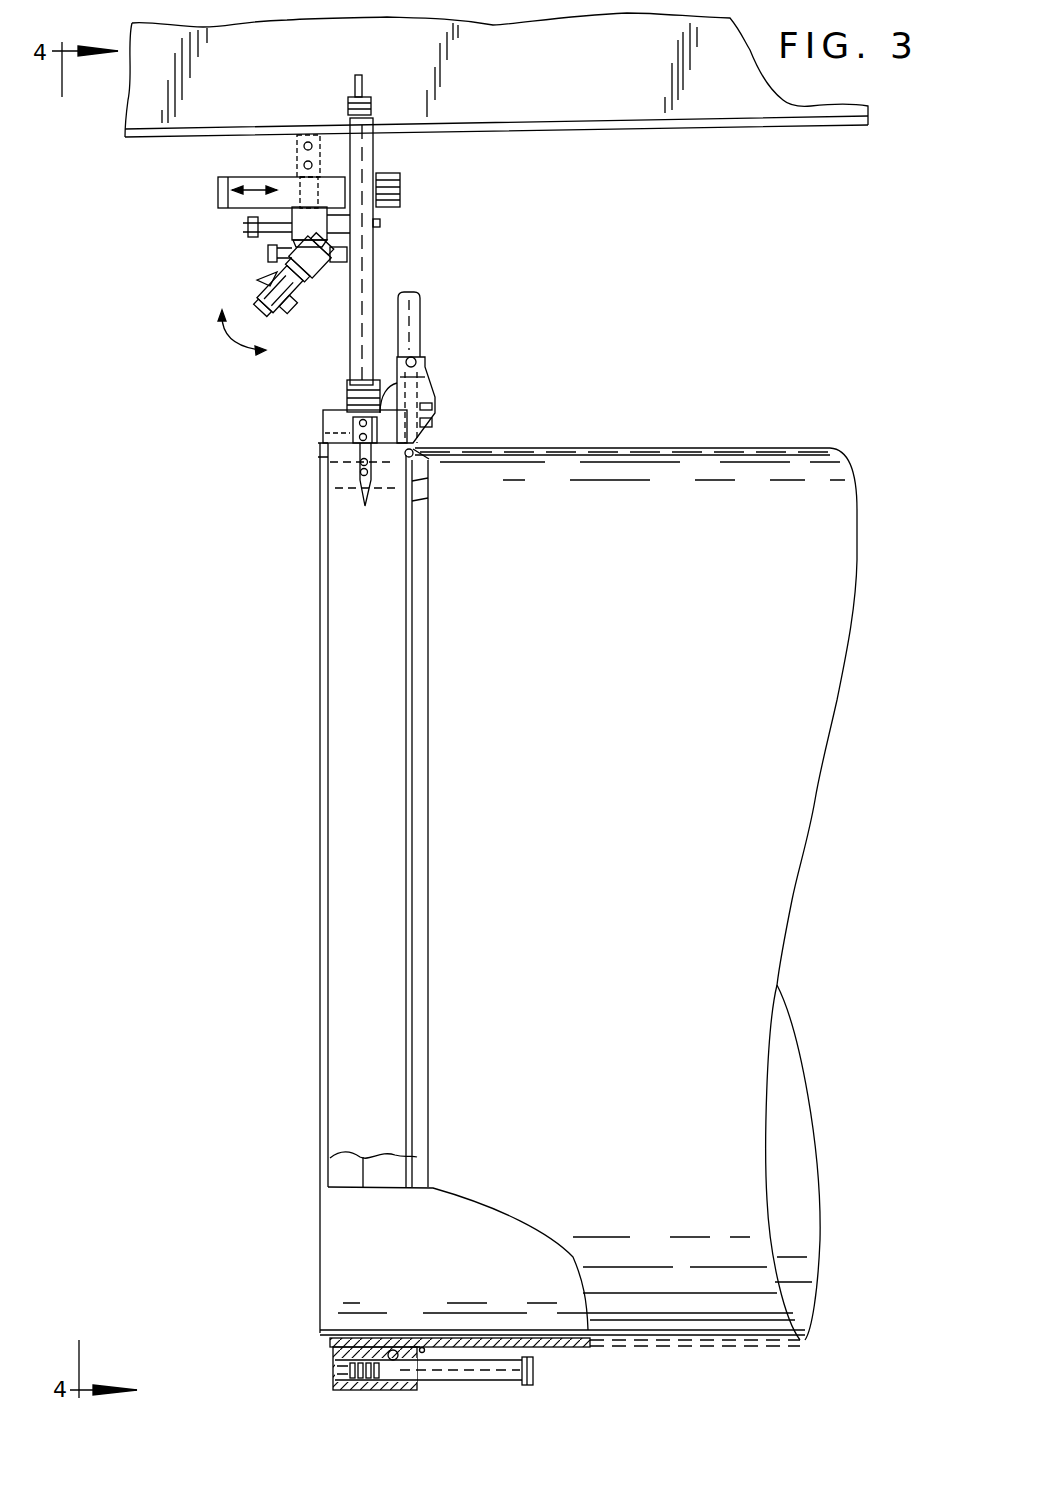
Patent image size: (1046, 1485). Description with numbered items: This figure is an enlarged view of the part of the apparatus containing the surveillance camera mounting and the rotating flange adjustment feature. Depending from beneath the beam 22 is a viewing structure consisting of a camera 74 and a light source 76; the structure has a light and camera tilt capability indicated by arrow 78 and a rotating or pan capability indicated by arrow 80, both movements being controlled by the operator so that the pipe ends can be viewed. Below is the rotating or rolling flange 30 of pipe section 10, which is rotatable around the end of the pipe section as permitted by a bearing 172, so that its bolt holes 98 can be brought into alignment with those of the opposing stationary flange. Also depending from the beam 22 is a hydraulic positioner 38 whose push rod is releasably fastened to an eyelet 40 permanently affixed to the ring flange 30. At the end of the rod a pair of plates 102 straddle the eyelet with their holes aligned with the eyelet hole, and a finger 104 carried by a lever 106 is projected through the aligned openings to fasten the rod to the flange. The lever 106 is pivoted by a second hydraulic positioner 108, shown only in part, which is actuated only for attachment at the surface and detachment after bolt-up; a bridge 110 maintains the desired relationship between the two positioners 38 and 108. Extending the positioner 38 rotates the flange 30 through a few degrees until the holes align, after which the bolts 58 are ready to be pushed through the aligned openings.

The beam 22 is at (566, 72).
The hydraulic positioner 38 is at (372, 150).
The arrow indicating rotating or pan capability 80 is at (254, 188).
The camera 74 is at (264, 292).
The light source 76 is at (298, 300).
The arrow indicating light/camera tilt capability 78 is at (232, 346).
The second hydraulic positioner 108 is at (422, 303).
The bridge 110 is at (436, 392).
The finger 104 is at (355, 448).
The eyelet 40 is at (360, 470).
The lever 106 is at (408, 462).
The plates 102 is at (372, 488).
The rotating flange 30 is at (342, 600).
The pipe section 10 is at (440, 663).
The bearing 172 is at (388, 1352).
The bolt holes 98 is at (398, 1360).
The bolts 58 is at (535, 1373).